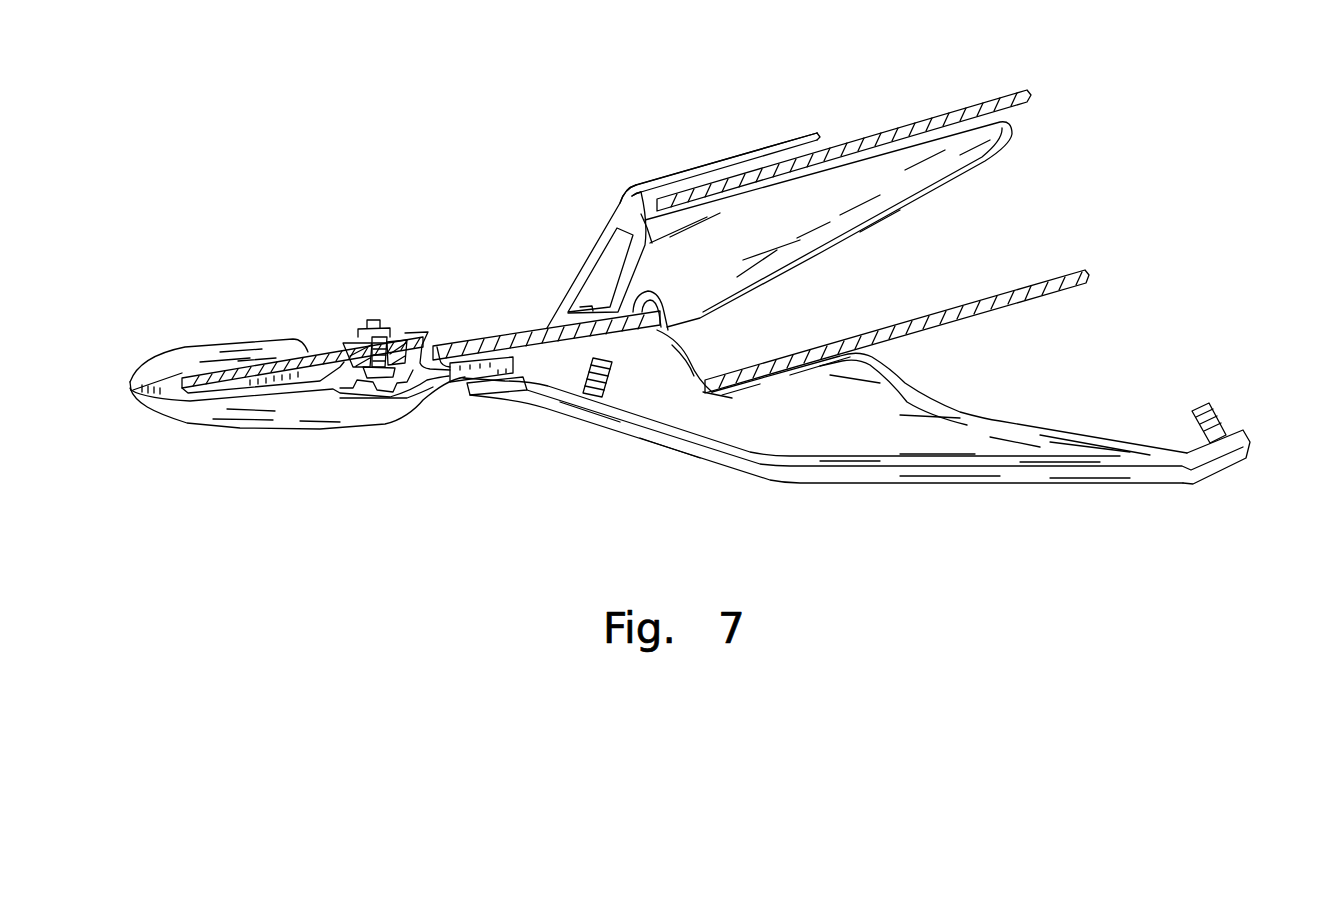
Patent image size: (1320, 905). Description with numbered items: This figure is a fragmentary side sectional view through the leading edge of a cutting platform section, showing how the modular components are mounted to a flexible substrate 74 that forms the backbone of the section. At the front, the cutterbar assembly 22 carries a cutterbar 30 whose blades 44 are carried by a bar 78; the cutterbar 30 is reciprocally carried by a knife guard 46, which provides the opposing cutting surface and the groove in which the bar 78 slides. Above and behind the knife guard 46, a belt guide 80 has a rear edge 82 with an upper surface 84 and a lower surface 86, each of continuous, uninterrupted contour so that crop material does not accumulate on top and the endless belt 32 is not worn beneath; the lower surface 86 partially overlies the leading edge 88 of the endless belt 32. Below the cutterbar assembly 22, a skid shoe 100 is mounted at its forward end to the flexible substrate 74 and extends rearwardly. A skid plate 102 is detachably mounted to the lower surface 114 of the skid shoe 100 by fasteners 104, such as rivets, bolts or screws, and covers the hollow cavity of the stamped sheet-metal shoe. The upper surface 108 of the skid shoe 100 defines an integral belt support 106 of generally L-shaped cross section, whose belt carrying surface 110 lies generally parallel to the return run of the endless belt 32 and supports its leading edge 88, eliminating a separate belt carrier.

The cutterbar assembly 22 is at (209, 326).
The cutterbar 30 is at (398, 295).
The endless belt 32 is at (909, 120).
The blades 44 is at (330, 352).
The knife guard 46 is at (181, 428).
The flexible substrate 74 is at (447, 390).
The bar 78 is at (356, 385).
The belt guide 80 is at (655, 163).
The rear edge 82 is at (817, 132).
The upper surface 84 is at (723, 160).
The lower surface 86 is at (777, 160).
The leading edge 88 is at (622, 198).
The skid shoe 100 is at (1012, 402).
The skid plate 102 is at (1010, 497).
The fasteners 104 is at (610, 377).
The belt support 106 is at (696, 348).
The upper surface 108 is at (906, 380).
The belt carrying surface 110 is at (820, 356).
The lower surface 114 is at (1153, 472).